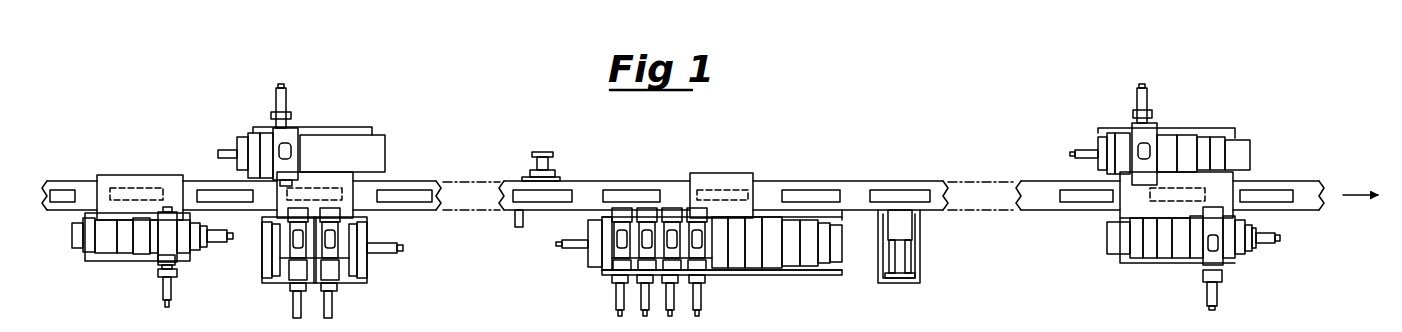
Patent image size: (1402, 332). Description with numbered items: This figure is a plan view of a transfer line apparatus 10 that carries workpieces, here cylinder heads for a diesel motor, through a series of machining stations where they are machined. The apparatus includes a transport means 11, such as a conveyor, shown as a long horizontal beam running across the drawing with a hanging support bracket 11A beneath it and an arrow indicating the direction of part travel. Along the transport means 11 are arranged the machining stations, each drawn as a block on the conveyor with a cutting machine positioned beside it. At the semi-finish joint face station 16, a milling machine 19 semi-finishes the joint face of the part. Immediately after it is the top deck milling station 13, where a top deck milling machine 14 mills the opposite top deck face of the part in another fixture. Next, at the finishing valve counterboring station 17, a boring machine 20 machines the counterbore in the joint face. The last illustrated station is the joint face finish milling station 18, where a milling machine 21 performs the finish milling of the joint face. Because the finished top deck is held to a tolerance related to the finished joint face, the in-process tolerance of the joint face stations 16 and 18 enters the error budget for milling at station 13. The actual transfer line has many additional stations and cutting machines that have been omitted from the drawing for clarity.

The transfer line apparatus 10 is at (819, 114).
The transport means 11 is at (852, 178).
The rail support bracket 11A is at (915, 181).
The top deck milling station 13 is at (367, 127).
The top deck milling machine 14 is at (371, 263).
The semi-finish joint face station 16 is at (136, 171).
The finishing valve counterboring station 17 is at (723, 170).
The joint face finish milling station 18 is at (1257, 147).
The milling machine 19 is at (122, 257).
The boring machine 20 is at (738, 281).
The milling machine 21 is at (1164, 268).